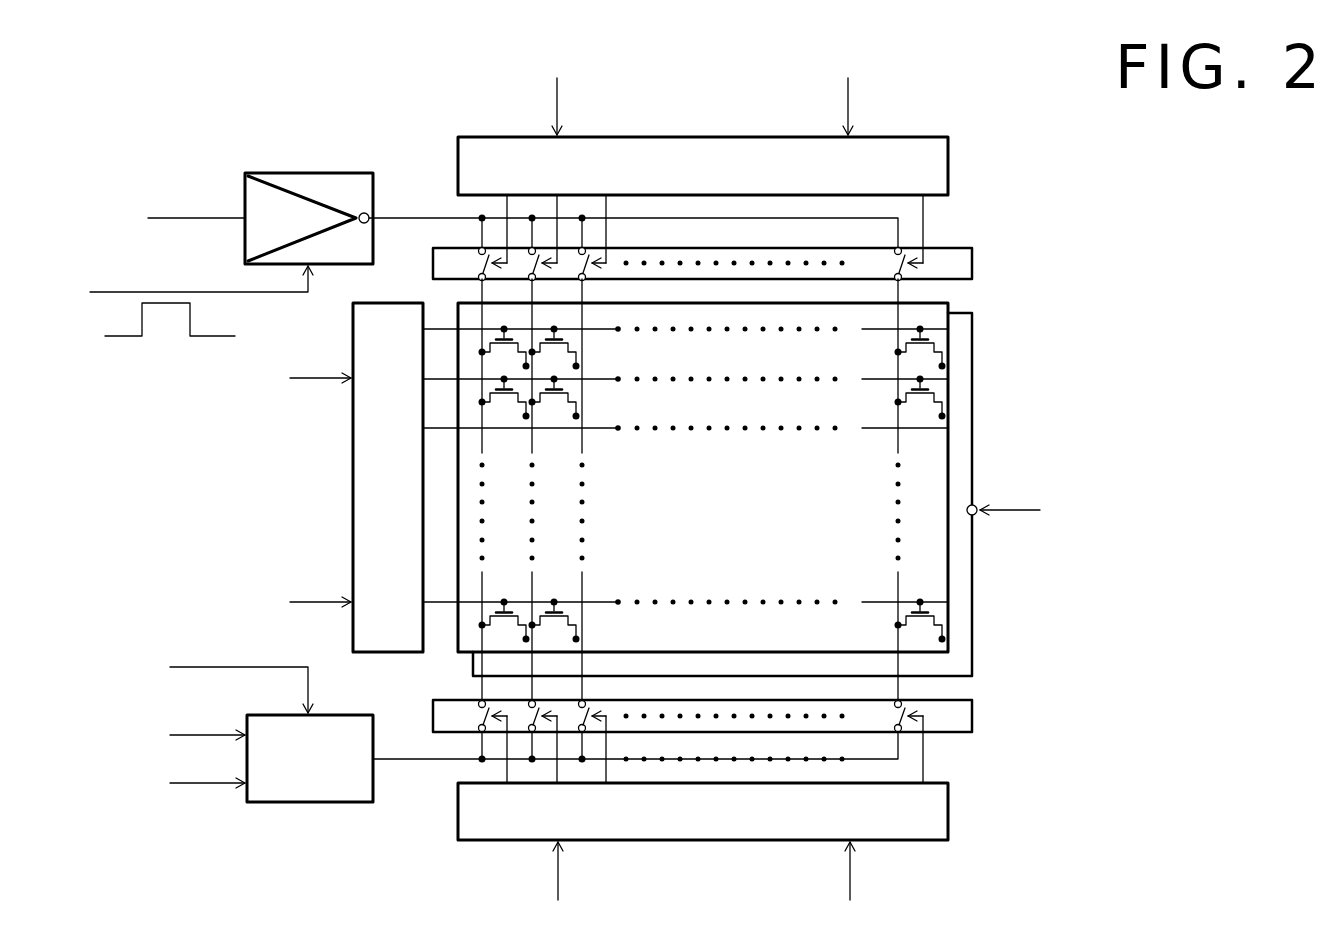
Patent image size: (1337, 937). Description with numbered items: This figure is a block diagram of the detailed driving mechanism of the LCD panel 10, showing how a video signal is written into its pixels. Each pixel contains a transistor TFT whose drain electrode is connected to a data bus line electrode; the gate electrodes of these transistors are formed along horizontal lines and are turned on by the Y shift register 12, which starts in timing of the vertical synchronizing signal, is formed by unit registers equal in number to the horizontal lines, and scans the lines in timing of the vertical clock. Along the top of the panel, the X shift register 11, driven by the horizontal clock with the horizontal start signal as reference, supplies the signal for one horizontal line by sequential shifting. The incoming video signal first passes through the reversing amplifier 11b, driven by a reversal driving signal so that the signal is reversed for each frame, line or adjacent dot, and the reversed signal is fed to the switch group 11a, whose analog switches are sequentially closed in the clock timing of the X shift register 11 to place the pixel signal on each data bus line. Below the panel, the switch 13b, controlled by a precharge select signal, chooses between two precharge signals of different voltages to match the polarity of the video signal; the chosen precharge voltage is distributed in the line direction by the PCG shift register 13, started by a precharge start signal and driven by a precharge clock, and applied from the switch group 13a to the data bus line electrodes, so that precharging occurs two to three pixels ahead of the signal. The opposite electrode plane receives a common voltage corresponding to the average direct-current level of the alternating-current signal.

The LCD panel 10 is at (752, 578).
The X shift register 11 is at (935, 172).
The switch group 11a is at (958, 268).
The reversing amplifier 11b is at (308, 173).
The Y shift register 12 is at (353, 335).
The PCG shift register 13 is at (935, 815).
The switch group 13a is at (958, 720).
The switch 13b is at (308, 802).
The transistor TFT is at (938, 610).